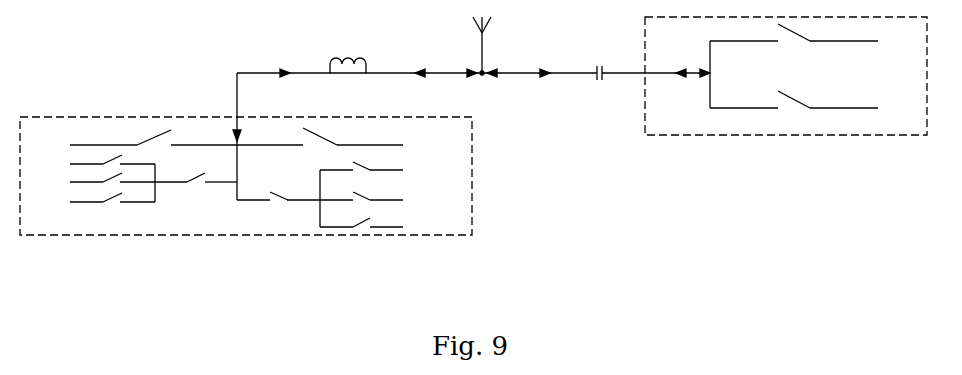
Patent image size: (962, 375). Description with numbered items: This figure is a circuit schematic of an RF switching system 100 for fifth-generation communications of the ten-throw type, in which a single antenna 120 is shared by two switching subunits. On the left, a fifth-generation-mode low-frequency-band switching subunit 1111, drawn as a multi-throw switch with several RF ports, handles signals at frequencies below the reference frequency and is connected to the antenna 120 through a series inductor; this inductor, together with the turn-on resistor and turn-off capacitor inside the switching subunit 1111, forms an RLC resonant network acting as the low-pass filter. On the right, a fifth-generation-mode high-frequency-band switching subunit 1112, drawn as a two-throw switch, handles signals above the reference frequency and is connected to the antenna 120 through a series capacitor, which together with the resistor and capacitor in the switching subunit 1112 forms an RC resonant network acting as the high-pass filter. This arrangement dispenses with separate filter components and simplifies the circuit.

The RF switching system 100 is at (141, 40).
The 5G-mode LF-band switching subunit 1111 is at (131, 126).
The 5G-mode HF-band switching subunit 1112 is at (708, 126).
The antenna 120 is at (485, 53).